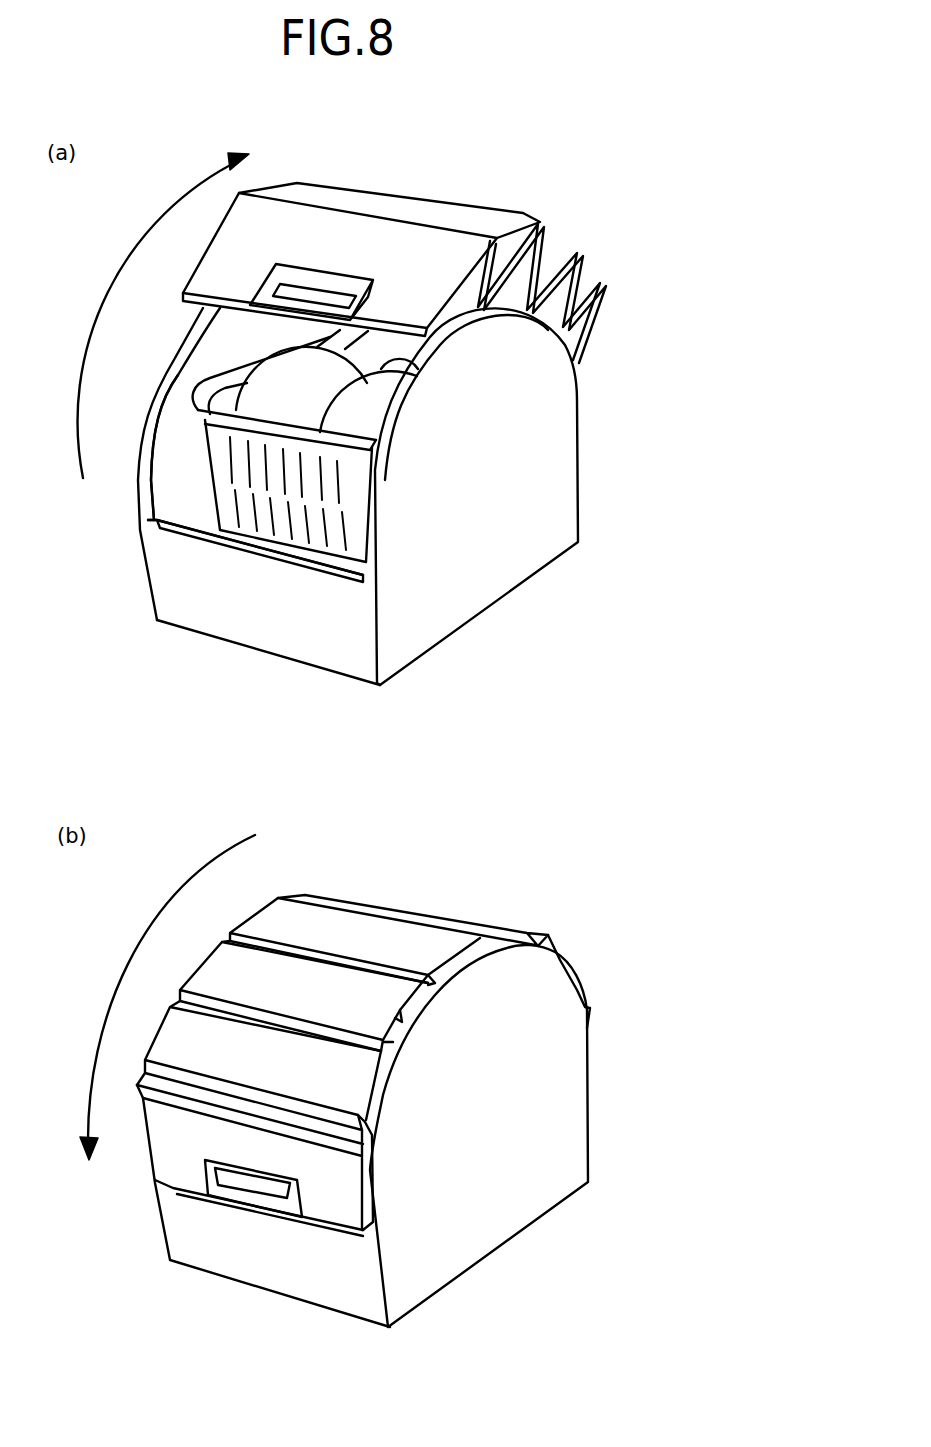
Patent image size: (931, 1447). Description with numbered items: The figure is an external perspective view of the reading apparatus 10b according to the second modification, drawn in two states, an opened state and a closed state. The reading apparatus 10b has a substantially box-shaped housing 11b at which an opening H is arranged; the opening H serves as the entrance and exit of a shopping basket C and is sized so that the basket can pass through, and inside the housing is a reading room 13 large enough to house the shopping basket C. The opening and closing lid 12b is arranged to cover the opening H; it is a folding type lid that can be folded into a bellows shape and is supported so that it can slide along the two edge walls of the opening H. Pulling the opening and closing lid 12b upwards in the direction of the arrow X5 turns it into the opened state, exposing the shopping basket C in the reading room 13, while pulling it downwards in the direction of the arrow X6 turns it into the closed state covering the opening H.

The reading apparatus 10b is at (573, 236).
The housing 11b is at (470, 577).
The opening and closing lid 12b is at (427, 247).
The reading room 13 is at (193, 373).
The opening H is at (180, 490).
The shopping basket C is at (283, 523).
The arrow (upward pulling direction) X5 is at (154, 315).
The arrow (downward pulling direction) X6 is at (167, 997).